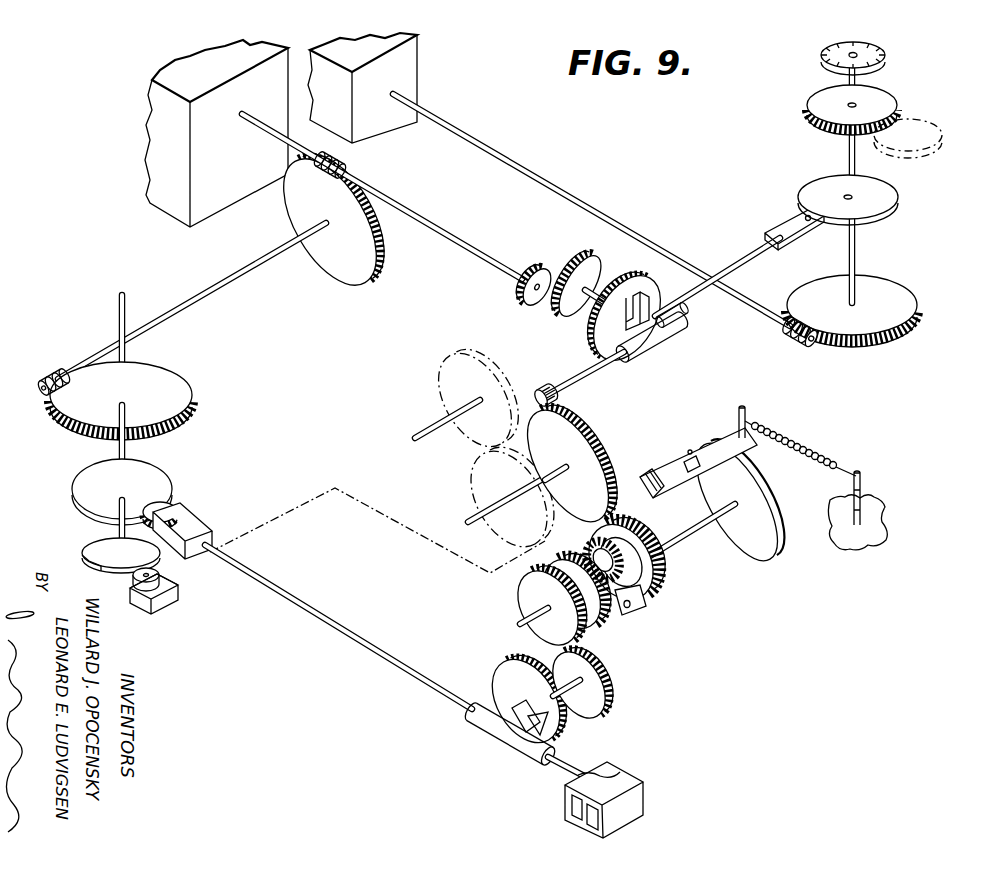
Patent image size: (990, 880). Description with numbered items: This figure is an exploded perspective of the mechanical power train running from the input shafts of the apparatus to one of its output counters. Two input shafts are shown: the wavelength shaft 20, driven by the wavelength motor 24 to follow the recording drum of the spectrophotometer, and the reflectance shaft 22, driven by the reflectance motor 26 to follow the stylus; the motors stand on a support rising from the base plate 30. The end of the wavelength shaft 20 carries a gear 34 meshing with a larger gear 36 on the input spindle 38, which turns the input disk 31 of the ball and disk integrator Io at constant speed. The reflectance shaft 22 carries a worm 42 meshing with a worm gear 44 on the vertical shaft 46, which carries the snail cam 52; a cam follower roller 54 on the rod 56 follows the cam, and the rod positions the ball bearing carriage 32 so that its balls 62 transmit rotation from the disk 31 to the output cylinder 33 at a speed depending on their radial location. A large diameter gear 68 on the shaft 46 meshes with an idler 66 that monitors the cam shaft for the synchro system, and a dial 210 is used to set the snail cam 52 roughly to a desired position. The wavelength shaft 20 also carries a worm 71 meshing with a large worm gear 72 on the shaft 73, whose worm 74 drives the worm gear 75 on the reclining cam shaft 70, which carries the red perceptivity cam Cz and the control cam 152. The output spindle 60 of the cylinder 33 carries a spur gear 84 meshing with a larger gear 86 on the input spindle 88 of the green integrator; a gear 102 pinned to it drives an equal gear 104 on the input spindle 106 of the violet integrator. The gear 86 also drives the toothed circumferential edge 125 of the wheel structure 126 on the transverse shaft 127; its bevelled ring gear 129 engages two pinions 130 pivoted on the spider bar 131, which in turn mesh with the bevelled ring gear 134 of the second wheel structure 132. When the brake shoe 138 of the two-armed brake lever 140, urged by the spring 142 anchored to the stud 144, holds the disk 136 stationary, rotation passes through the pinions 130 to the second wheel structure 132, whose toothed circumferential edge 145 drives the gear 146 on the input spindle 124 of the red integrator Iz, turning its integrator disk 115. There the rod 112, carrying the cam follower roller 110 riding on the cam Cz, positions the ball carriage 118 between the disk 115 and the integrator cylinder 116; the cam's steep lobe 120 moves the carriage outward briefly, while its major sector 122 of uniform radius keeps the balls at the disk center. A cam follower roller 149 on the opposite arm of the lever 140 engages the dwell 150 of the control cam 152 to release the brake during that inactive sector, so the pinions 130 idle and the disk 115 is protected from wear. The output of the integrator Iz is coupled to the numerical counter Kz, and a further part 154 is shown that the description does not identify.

The wavelength shaft 20 is at (420, 222).
The reflectance shaft 22 is at (520, 170).
The wavelength motor 24 is at (165, 105).
The reflectance motor 26 is at (412, 76).
The base plate 30 is at (880, 536).
The input disk 31 is at (614, 288).
The ball bearing carriage 32 is at (672, 318).
The output cylinder 33 is at (642, 348).
The gear 34 is at (535, 267).
The gear 36 is at (575, 258).
The input spindle 38 is at (588, 306).
The worm 42 is at (807, 344).
The worm gear 44 is at (890, 337).
The vertical shaft 46 is at (858, 256).
The snail cam 52 is at (899, 203).
The cam follower roller 54 is at (795, 216).
The rod 56 is at (760, 246).
The output spindle 60 is at (582, 380).
The balls 62 is at (632, 312).
The idler 66 is at (938, 133).
The large diameter gear 68 is at (894, 98).
The cam shaft 70 is at (126, 357).
The worm 71 is at (342, 162).
The worm gear 72 is at (382, 264).
The shaft 73 is at (228, 278).
The worm 74 is at (52, 372).
The worm gear 75 is at (60, 440).
The spur gear 84 is at (541, 391).
The gear 86 is at (596, 433).
The input spindle 88 is at (483, 525).
The gear 102 is at (474, 487).
The gear 104 is at (438, 386).
The input spindle 106 is at (425, 443).
The cam follower roller 110 is at (172, 498).
The rod 112 is at (285, 574).
The integrator disk 115 is at (512, 670).
The integrator cylinder 116 is at (466, 713).
The ball carriage 118 is at (536, 735).
The lobe 120 is at (140, 518).
The major sector 122 is at (160, 470).
The input spindle 124 is at (560, 715).
The toothed circumferential edge 125 is at (658, 563).
The wheel structure 126 is at (664, 603).
The transverse shaft 127 is at (680, 542).
The bevelled ring gear 129 is at (645, 532).
The pinions 130 is at (576, 518).
The spider bar 131 is at (632, 613).
The second wheel structure 132 is at (514, 588).
The bevelled ring gear 134 is at (542, 528).
The disk 136 is at (780, 553).
The brake shoe 138 is at (691, 460).
The brake lever 140 is at (660, 466).
The spring 142 is at (800, 441).
The stud 144 is at (862, 500).
The toothed circumferential edge 145 is at (585, 634).
The gear 146 is at (604, 682).
The cam follower roller 149 is at (170, 590).
The dwell 150 is at (98, 538).
The control cam 152 is at (80, 551).
The block 154 is at (130, 603).
The dial 210 is at (886, 56).
The ball and disk integrator Io is at (668, 346).
The integrator Iz is at (486, 749).
The cam Cz is at (70, 489).
The numerical counter Kz is at (654, 790).